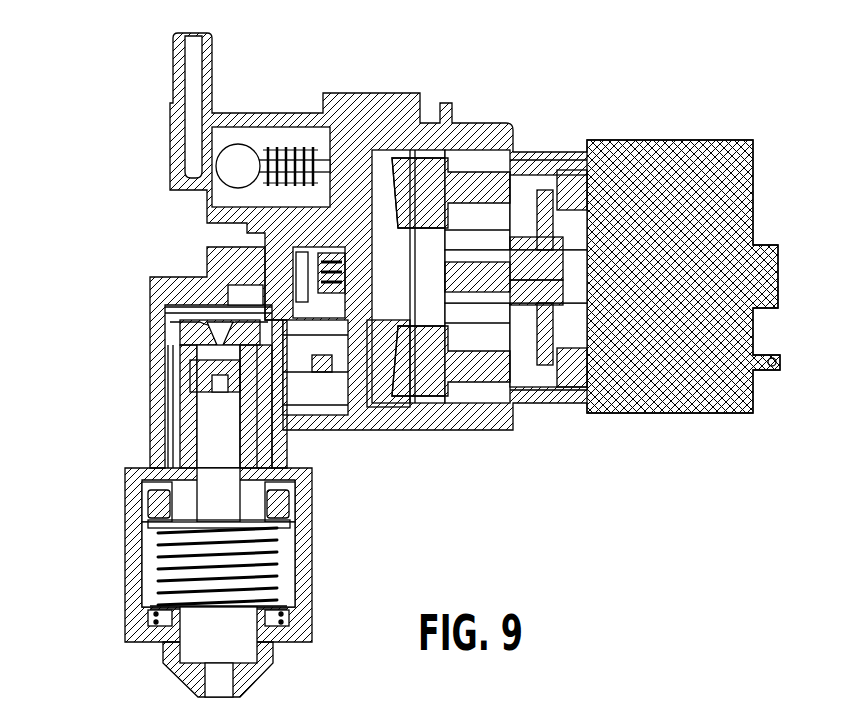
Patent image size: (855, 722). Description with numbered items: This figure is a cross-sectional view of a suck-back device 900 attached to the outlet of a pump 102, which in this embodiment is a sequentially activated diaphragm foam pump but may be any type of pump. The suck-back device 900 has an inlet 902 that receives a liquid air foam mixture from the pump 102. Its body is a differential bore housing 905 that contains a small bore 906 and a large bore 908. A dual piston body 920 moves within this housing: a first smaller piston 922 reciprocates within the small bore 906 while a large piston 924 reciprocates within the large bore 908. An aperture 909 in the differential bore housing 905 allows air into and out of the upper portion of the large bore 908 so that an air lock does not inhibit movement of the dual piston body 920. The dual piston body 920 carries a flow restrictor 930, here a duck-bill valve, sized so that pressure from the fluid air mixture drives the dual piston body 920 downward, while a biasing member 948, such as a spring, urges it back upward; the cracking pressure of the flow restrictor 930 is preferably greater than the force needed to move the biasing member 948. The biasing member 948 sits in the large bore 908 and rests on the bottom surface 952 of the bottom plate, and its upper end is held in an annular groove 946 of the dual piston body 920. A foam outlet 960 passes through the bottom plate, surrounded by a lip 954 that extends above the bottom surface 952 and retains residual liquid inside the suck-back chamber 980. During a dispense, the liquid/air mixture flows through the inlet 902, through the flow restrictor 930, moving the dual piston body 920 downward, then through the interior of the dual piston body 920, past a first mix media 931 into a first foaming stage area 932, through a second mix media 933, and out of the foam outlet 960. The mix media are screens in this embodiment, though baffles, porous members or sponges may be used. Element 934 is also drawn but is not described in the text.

The pump 102 is at (520, 74).
The suck-back device 900 is at (223, 452).
The inlet 902 is at (200, 247).
The differential bore housing 905 is at (352, 640).
The small bore 906 is at (162, 347).
The large bore 908 is at (300, 556).
The aperture 909 is at (145, 498).
The dual piston body 920 is at (285, 512).
The first smaller piston 922 is at (165, 325).
The large piston 924 is at (153, 528).
The flow restrictor 930 is at (207, 356).
The first mix media 931 is at (210, 410).
The first foaming stage area 932 is at (215, 433).
The second mix media 933 is at (210, 498).
The pin 934 is at (218, 387).
The annular groove 946 is at (143, 567).
The biasing member 948 is at (296, 573).
The bottom surface 952 is at (153, 623).
The lip 954 is at (287, 623).
The foam outlet 960 is at (213, 690).
The suck-back chamber 980 is at (150, 578).